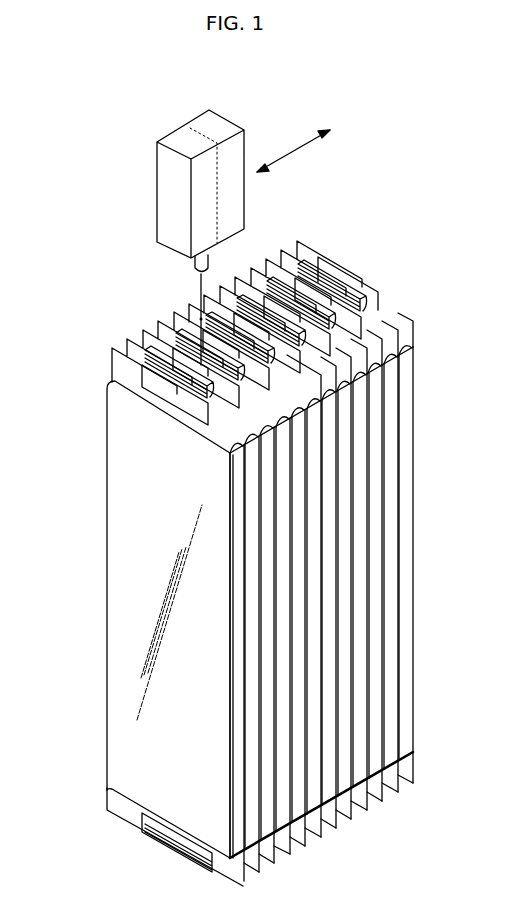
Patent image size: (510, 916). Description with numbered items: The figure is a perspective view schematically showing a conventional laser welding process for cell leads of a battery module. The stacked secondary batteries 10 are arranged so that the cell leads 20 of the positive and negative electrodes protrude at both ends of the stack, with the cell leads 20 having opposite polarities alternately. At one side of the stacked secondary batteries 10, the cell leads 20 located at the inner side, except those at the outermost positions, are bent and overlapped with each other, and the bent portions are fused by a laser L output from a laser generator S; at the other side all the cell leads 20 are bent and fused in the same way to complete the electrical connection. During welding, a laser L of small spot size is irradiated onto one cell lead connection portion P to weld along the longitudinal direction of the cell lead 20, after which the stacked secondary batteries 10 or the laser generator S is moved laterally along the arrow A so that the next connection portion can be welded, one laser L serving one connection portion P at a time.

The stacked secondary batteries 10 is at (107, 536).
The cell lead 20 is at (322, 292).
The laser generator S is at (167, 188).
The laser L is at (198, 288).
The cell lead connection portion P is at (150, 340).
The arrow A is at (293, 150).